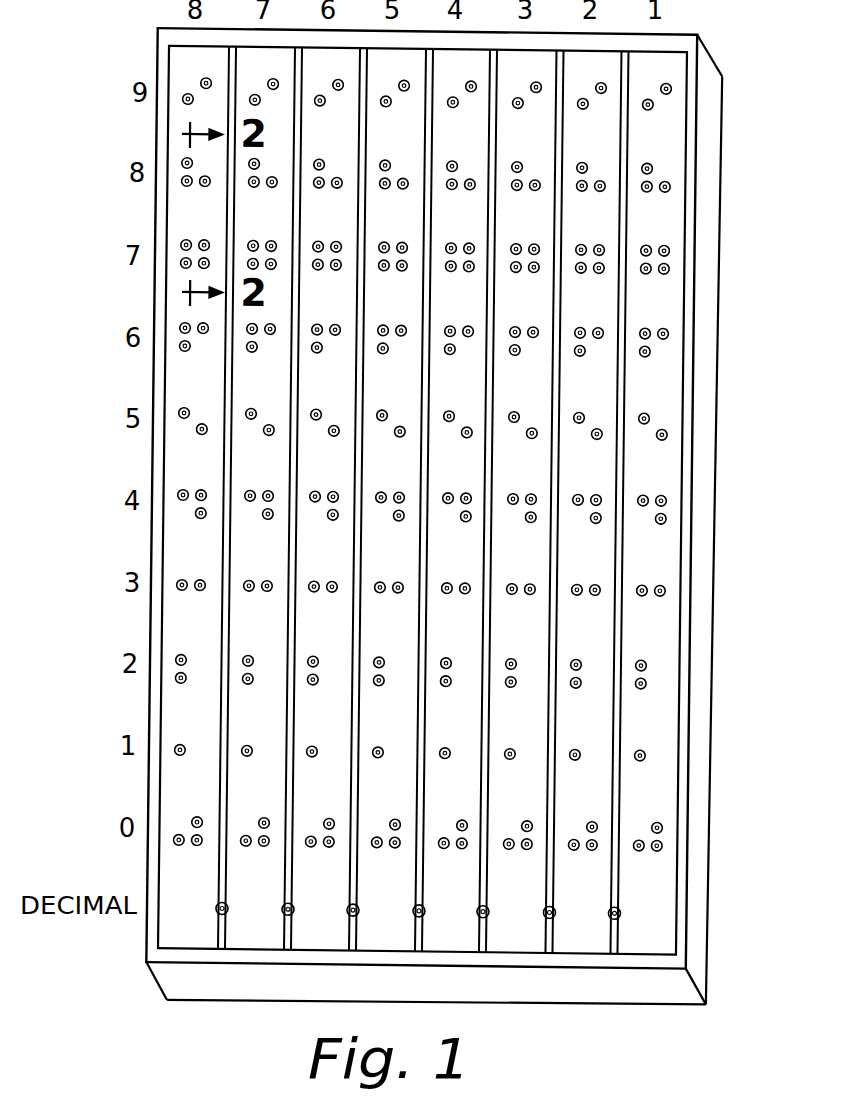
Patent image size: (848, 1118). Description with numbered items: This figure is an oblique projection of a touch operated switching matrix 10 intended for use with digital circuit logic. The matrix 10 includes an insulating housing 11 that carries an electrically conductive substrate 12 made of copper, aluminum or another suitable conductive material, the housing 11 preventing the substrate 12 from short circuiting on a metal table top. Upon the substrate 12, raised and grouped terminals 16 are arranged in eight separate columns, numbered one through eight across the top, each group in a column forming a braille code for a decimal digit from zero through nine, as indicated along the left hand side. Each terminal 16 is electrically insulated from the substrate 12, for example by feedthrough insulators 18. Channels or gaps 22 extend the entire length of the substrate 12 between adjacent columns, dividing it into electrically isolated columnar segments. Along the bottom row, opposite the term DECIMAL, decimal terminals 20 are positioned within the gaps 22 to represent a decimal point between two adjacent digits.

The switching matrix 10 is at (727, 214).
The housing 11 is at (705, 362).
The electrically conductive substrate 12 is at (242, 633).
The terminals 16 is at (187, 478).
The feedthrough insulators 18 is at (184, 746).
The decimal terminals 20 is at (287, 908).
The gaps 22 is at (296, 770).